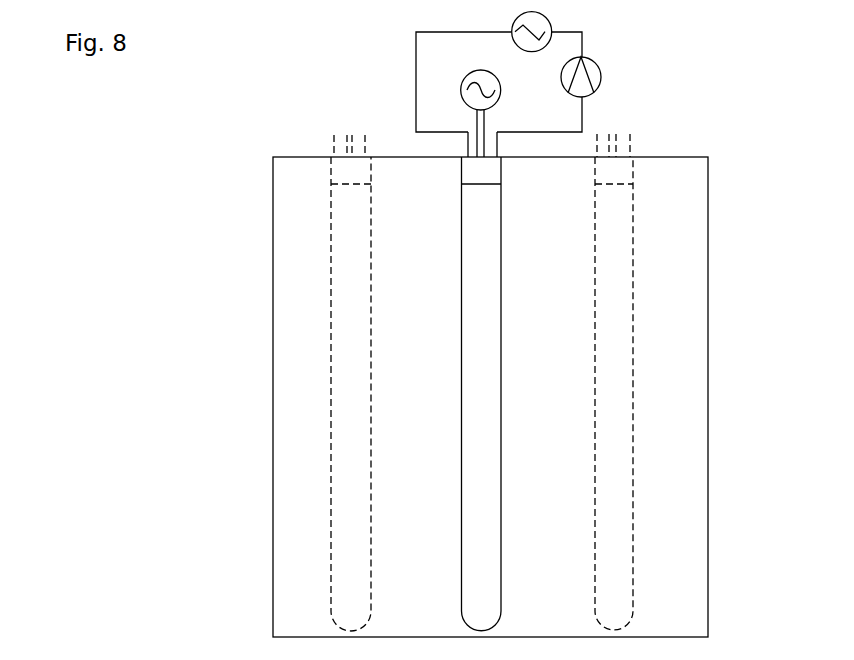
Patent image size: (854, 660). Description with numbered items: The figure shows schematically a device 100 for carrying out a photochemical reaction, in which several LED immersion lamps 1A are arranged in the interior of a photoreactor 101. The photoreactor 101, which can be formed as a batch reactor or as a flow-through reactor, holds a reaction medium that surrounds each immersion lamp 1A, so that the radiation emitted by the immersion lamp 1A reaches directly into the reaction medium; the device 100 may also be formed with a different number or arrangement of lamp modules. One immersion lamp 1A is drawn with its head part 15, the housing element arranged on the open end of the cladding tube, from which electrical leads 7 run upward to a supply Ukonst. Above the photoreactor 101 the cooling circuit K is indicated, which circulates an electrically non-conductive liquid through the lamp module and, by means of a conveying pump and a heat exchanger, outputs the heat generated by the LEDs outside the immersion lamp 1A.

The device for carrying out a photochemical reaction 100 is at (180, 172).
The photoreactor 101 is at (285, 315).
The immersion lamp 1A is at (378, 351).
The head part 15 is at (487, 173).
The electrode leads 7 is at (480, 147).
The cooling circuit K is at (582, 113).
The constant voltage source Ukonst is at (461, 90).